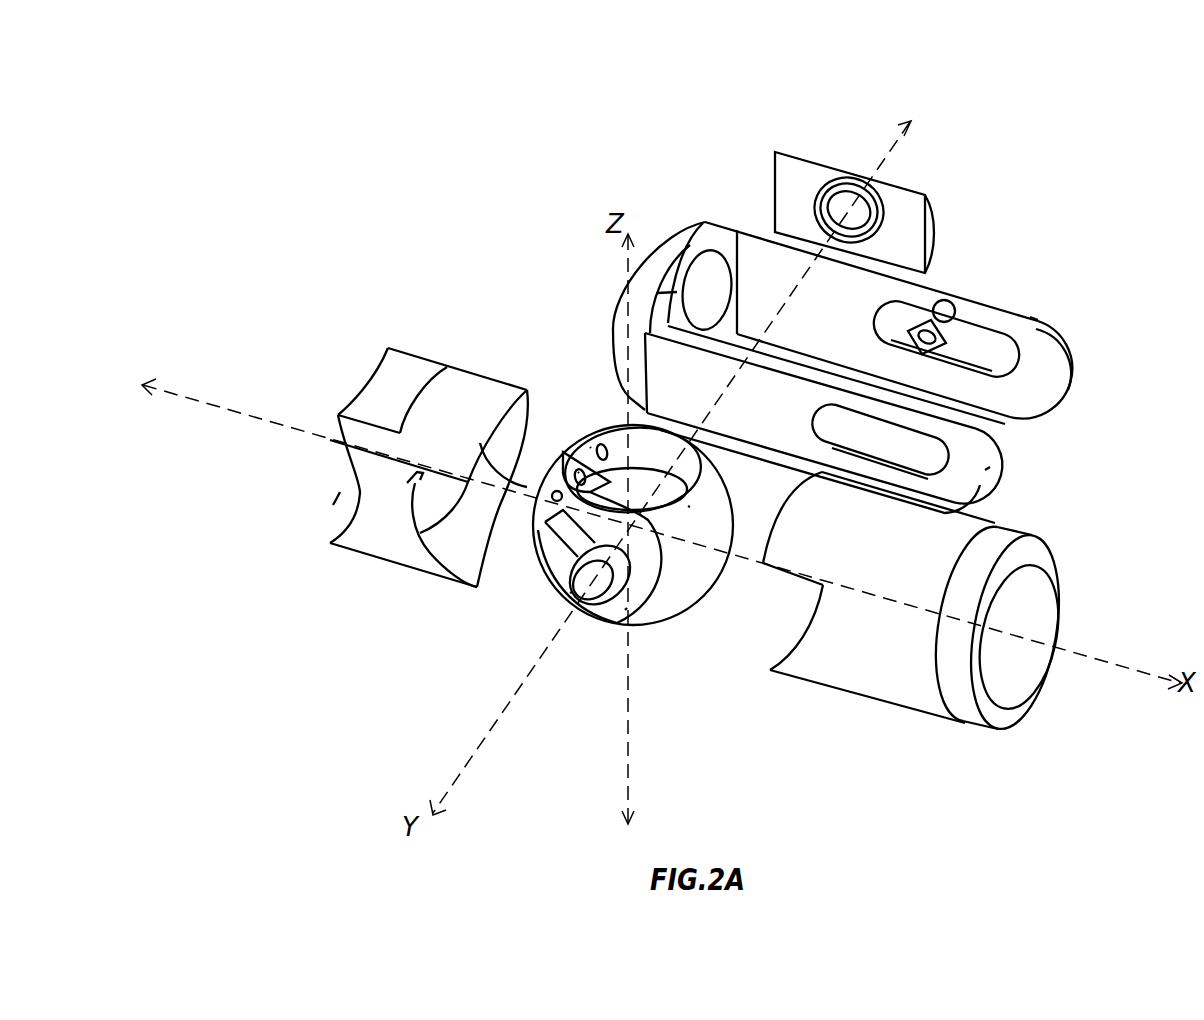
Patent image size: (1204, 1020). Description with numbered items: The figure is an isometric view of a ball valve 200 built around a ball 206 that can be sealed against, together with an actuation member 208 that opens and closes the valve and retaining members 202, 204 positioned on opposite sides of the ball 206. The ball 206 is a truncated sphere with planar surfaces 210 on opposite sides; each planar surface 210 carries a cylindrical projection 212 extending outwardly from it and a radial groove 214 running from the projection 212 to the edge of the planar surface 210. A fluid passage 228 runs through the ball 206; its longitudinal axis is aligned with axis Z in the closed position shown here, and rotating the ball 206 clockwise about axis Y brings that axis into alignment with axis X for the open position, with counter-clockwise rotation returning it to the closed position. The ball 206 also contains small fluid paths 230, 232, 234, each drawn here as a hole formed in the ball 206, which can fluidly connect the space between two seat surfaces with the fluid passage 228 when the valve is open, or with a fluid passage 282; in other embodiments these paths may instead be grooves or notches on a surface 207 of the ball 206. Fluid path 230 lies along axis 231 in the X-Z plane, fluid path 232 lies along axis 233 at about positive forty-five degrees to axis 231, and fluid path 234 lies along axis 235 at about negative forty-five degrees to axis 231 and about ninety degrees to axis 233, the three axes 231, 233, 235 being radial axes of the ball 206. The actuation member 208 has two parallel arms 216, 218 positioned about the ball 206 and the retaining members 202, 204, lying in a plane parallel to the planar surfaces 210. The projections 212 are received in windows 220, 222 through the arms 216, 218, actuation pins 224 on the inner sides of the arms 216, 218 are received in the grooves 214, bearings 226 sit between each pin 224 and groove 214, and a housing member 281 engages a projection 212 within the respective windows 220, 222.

The ball valve 200 is at (338, 190).
The retaining member 202 is at (383, 527).
The retaining member 204 is at (885, 680).
The ball 206 is at (680, 601).
The surface of the ball 207 is at (657, 626).
The actuation member 208 is at (730, 294).
The planar surface 210 is at (625, 610).
The projection 212 is at (575, 613).
The radial groove 214 is at (570, 593).
The arm 216 is at (990, 467).
The arm 218 is at (1030, 317).
The window 220 is at (910, 440).
The window 222 is at (987, 343).
The actuation pin 224 is at (945, 305).
The bearing 226 is at (925, 325).
The fluid passage 228 is at (648, 440).
The fluid path 230 is at (578, 472).
The axis 231 is at (590, 447).
The fluid path 232 is at (604, 447).
The axis 233 is at (690, 507).
The fluid path 234 is at (551, 496).
The axis 235 is at (647, 510).
The housing member 281 is at (806, 153).
The fluid passage 282 is at (333, 505).